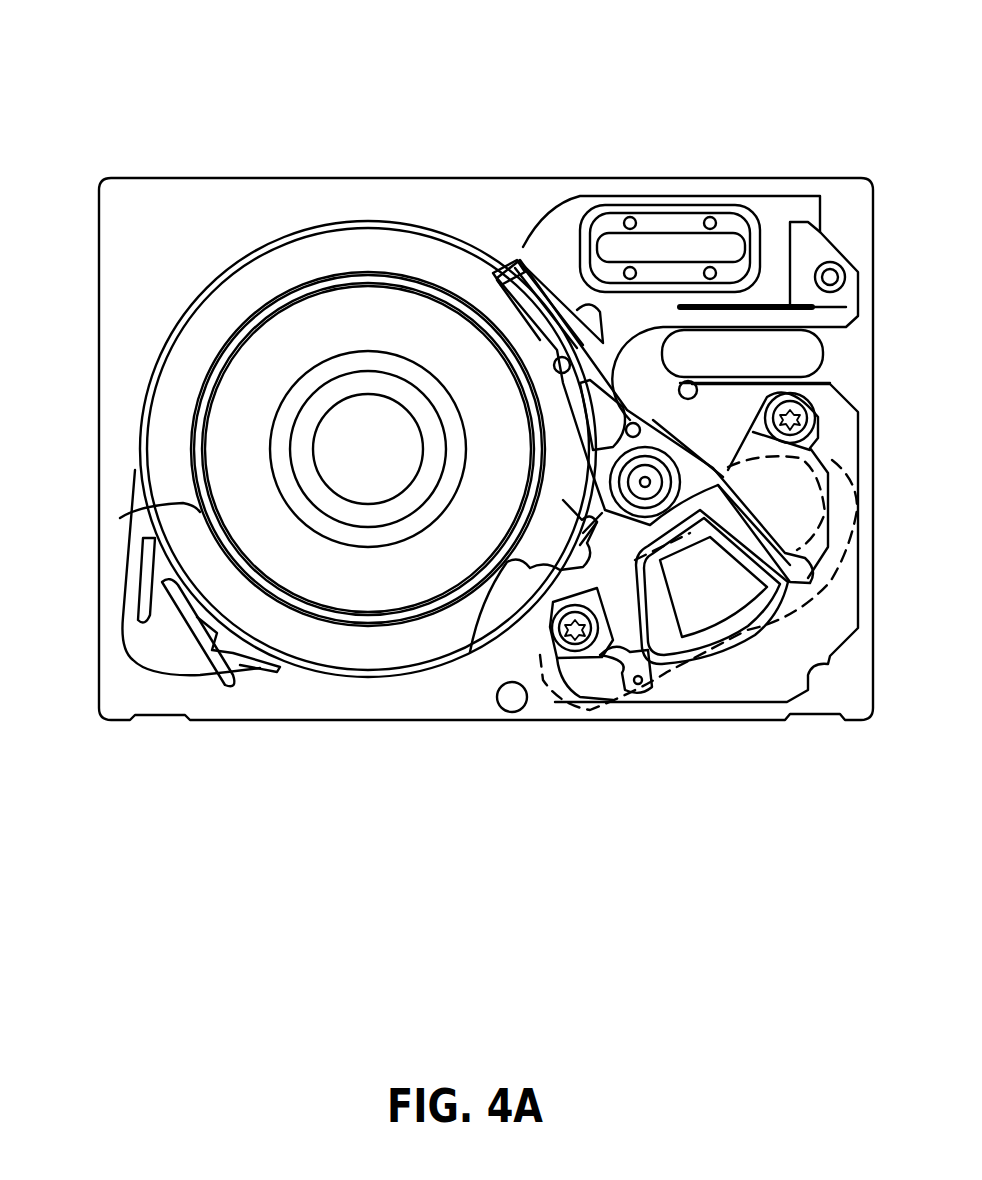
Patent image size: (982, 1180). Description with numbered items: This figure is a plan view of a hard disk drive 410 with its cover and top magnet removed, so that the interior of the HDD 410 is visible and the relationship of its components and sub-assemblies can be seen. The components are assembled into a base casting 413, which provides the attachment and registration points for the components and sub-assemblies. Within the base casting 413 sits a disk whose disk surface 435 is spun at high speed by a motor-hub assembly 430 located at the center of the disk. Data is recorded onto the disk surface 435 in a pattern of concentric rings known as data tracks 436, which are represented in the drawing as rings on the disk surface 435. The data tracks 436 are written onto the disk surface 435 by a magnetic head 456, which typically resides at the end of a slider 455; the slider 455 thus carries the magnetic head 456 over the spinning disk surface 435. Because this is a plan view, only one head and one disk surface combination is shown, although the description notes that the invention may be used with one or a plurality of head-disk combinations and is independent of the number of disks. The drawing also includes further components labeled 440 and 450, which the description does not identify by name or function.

The hard disk drive 410 is at (186, 112).
The base casting 413 is at (122, 404).
The motor-hub assembly 430 is at (368, 445).
The disk surface 435 is at (294, 270).
The data tracks 436 is at (120, 518).
The actuator arm 440 is at (615, 505).
The voice coil motor 450 is at (715, 660).
The slider 455 is at (506, 262).
The magnetic head 456 is at (497, 280).